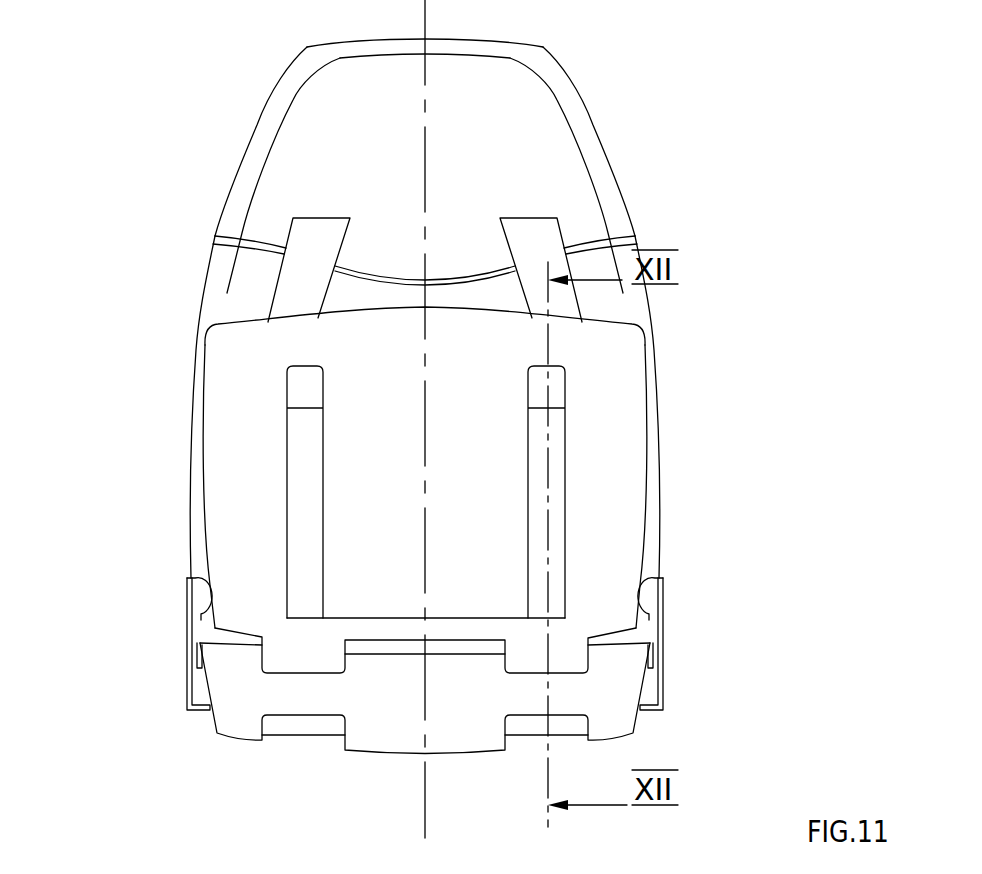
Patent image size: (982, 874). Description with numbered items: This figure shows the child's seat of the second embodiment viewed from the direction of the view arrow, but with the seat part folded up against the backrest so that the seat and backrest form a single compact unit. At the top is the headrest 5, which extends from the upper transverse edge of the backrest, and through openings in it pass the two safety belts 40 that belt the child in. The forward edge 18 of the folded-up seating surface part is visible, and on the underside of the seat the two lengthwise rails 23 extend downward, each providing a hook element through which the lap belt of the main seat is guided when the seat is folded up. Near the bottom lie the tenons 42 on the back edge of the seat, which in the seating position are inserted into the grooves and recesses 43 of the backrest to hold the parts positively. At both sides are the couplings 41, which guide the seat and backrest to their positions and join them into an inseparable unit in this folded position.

The headrest 5 is at (547, 153).
The forward edge 18 is at (235, 320).
The lengthwise rails 23 is at (305, 515).
The safety belts 40 is at (313, 238).
The coupling 41 is at (197, 607).
The tenons 42 is at (273, 647).
The grooves and recesses 43 is at (305, 728).